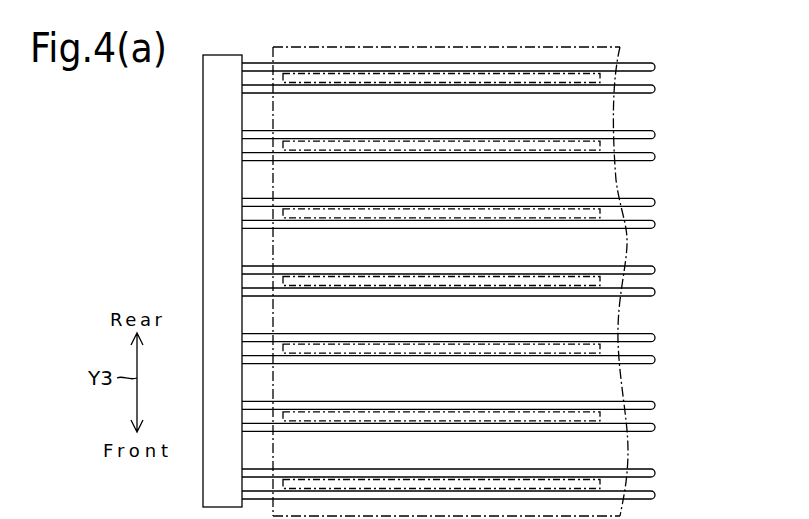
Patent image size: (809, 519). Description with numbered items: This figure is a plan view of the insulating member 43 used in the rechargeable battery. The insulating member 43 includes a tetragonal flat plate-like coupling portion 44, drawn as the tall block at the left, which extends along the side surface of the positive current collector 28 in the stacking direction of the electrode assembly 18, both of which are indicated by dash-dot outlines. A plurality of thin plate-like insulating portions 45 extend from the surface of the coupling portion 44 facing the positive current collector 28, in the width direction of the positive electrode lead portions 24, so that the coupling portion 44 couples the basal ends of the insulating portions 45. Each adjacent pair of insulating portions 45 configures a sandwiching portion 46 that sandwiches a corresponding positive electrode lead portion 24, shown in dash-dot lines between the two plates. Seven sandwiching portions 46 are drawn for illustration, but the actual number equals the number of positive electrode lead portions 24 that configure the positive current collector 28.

The electrode assembly 18 is at (492, 46).
The positive electrode lead portion 24 is at (335, 82).
The positive current collector 28 is at (284, 31).
The insulating member 43 is at (729, 38).
The coupling portion 44 is at (212, 277).
The insulating portion 45 is at (472, 281).
The sandwiching portion 46 is at (496, 281).